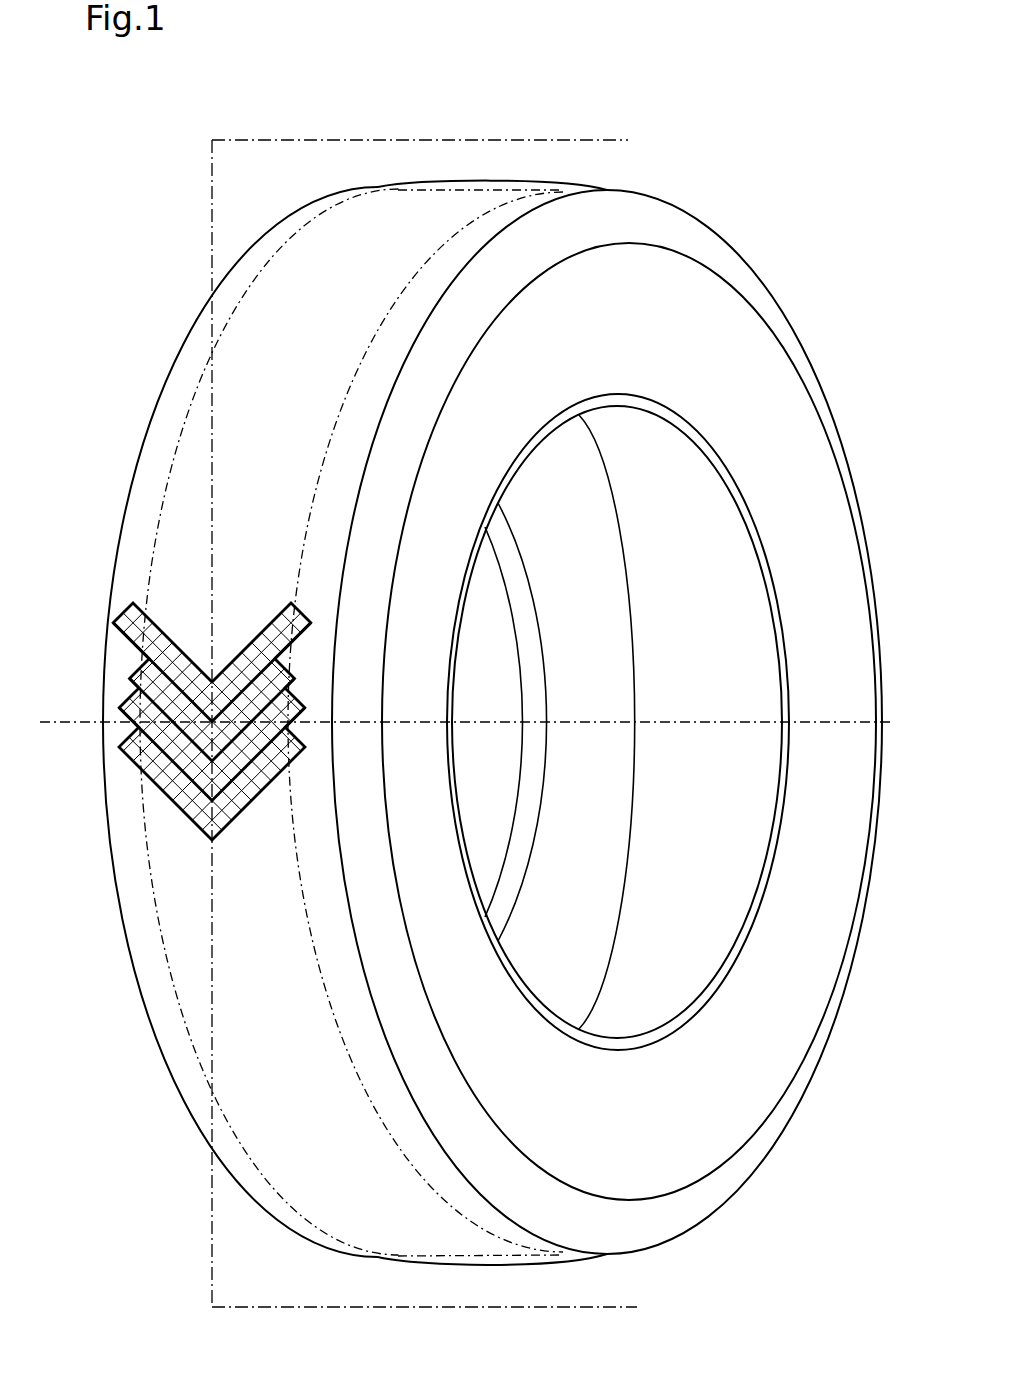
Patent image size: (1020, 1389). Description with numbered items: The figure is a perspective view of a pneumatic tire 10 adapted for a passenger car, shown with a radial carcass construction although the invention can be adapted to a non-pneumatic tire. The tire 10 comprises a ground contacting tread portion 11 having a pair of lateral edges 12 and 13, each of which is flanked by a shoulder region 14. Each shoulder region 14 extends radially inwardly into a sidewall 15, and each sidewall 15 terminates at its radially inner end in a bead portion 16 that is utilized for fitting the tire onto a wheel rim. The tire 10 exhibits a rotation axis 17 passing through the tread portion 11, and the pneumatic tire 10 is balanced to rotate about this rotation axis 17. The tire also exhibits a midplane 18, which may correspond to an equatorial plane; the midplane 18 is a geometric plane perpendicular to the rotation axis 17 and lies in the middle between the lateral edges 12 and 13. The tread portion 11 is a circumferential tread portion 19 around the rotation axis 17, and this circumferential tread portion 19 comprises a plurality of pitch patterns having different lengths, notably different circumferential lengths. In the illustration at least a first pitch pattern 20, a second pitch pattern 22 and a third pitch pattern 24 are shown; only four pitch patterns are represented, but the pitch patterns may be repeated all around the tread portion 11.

The tire 10 is at (178, 230).
The ground contacting tread portion 11 is at (294, 341).
The lateral edge 12 is at (693, 222).
The lateral edge 13 is at (186, 330).
The shoulder region 14 is at (136, 500).
The sidewall 15 is at (777, 458).
The bead portion 16 is at (617, 1042).
The rotation axis 17 is at (670, 722).
The midplane 18 is at (345, 140).
The circumferential tread portion 19 is at (192, 876).
The first pitch pattern 20 is at (129, 679).
The second pitch pattern 22 is at (118, 708).
The third pitch pattern 24 is at (252, 642).